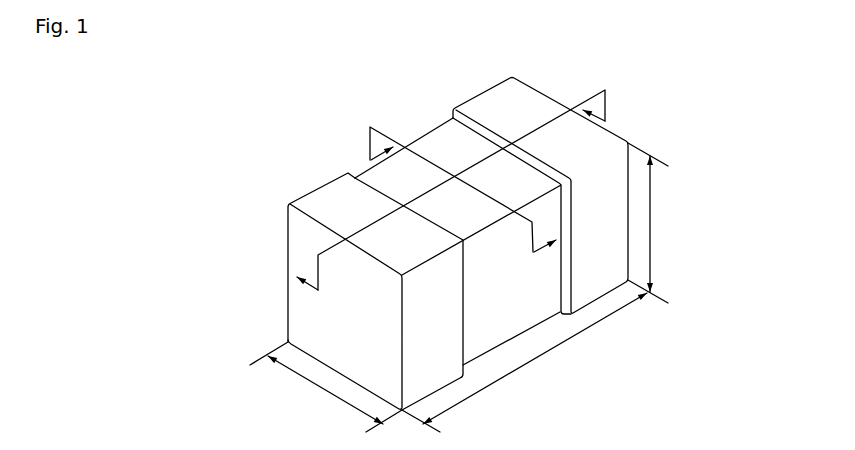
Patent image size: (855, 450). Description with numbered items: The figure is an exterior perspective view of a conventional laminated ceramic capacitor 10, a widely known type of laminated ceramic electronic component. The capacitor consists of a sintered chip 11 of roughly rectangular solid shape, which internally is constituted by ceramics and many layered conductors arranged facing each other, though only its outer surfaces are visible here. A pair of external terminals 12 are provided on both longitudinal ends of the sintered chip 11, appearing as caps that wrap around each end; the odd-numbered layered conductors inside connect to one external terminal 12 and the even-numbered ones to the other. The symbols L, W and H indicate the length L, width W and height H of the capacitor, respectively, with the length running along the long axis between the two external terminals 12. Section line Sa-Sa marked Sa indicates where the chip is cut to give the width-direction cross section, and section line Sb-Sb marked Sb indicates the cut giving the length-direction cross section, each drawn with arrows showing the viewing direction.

The laminated ceramic capacitor 10 is at (289, 203).
The sintered chip 11 is at (437, 142).
The external terminal 12 is at (331, 197).
The line Sa- Sa is at (449, 199).
The line Sb- Sb is at (465, 197).
The length L is at (524, 362).
The width W is at (326, 387).
The height H is at (650, 223).